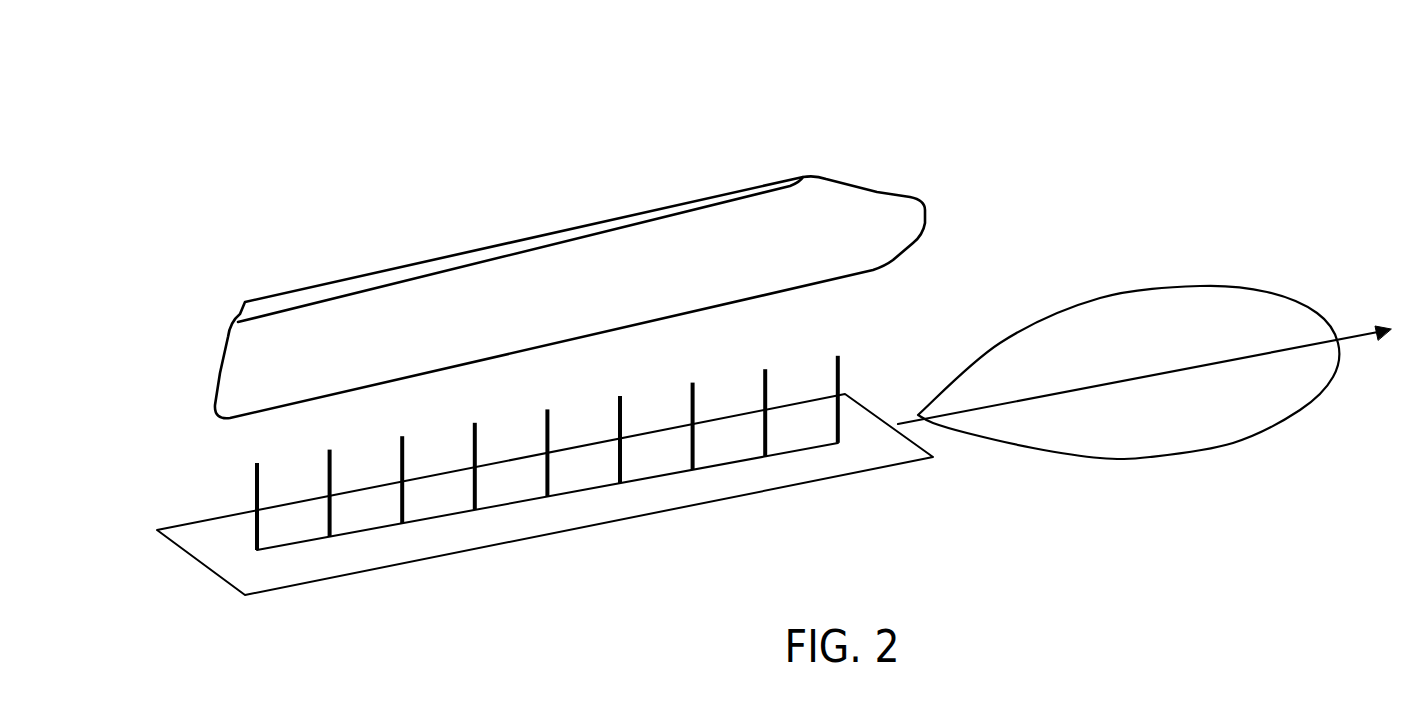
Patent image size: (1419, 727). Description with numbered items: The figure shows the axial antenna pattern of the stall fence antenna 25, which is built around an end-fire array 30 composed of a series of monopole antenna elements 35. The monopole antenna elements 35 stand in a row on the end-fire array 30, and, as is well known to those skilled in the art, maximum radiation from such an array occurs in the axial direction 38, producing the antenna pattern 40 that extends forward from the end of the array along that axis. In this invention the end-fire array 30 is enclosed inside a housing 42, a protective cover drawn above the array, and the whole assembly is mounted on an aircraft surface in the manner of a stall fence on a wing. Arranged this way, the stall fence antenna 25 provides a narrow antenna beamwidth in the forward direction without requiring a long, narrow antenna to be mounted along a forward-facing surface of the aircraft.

The stall fence antenna 25 is at (872, 66).
The end-fire array 30 is at (427, 561).
The monopole antenna elements 35 is at (253, 482).
The axial direction 38 is at (1077, 392).
The antenna pattern 40 is at (1153, 290).
The housing 42 is at (513, 233).